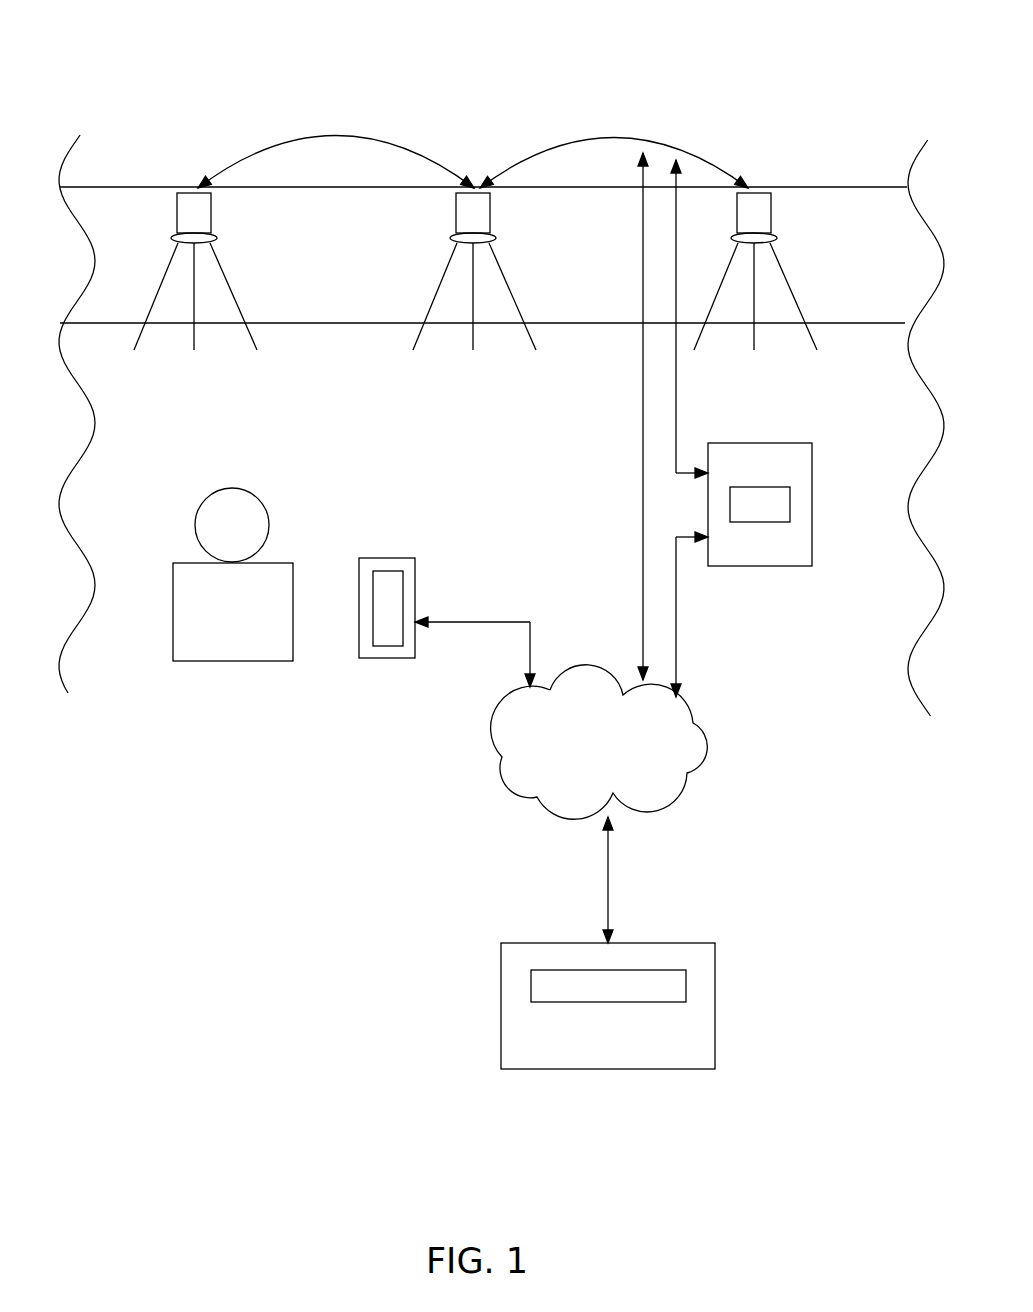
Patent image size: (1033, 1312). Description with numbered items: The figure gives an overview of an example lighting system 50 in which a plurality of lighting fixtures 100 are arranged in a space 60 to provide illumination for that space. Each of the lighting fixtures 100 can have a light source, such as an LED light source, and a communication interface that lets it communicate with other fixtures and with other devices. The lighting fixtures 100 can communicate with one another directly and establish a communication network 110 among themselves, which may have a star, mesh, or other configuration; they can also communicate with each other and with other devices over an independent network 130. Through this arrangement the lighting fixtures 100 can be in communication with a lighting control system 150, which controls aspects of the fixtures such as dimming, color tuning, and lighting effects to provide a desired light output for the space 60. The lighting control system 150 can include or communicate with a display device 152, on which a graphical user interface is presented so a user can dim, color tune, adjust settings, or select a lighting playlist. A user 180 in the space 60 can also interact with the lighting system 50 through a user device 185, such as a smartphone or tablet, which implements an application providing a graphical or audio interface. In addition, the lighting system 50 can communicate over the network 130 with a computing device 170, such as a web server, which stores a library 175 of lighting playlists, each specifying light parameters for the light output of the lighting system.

The lighting system 50 is at (222, 80).
The space 60 is at (108, 425).
The lighting fixtures 100 is at (211, 212).
The communication network 110 is at (365, 134).
The network 130 is at (707, 745).
The lighting control system 150 is at (760, 566).
The display device 152 is at (790, 503).
The computing device 170 is at (715, 975).
The library 175 is at (531, 987).
The user 180 is at (236, 661).
The user device 185 is at (386, 658).